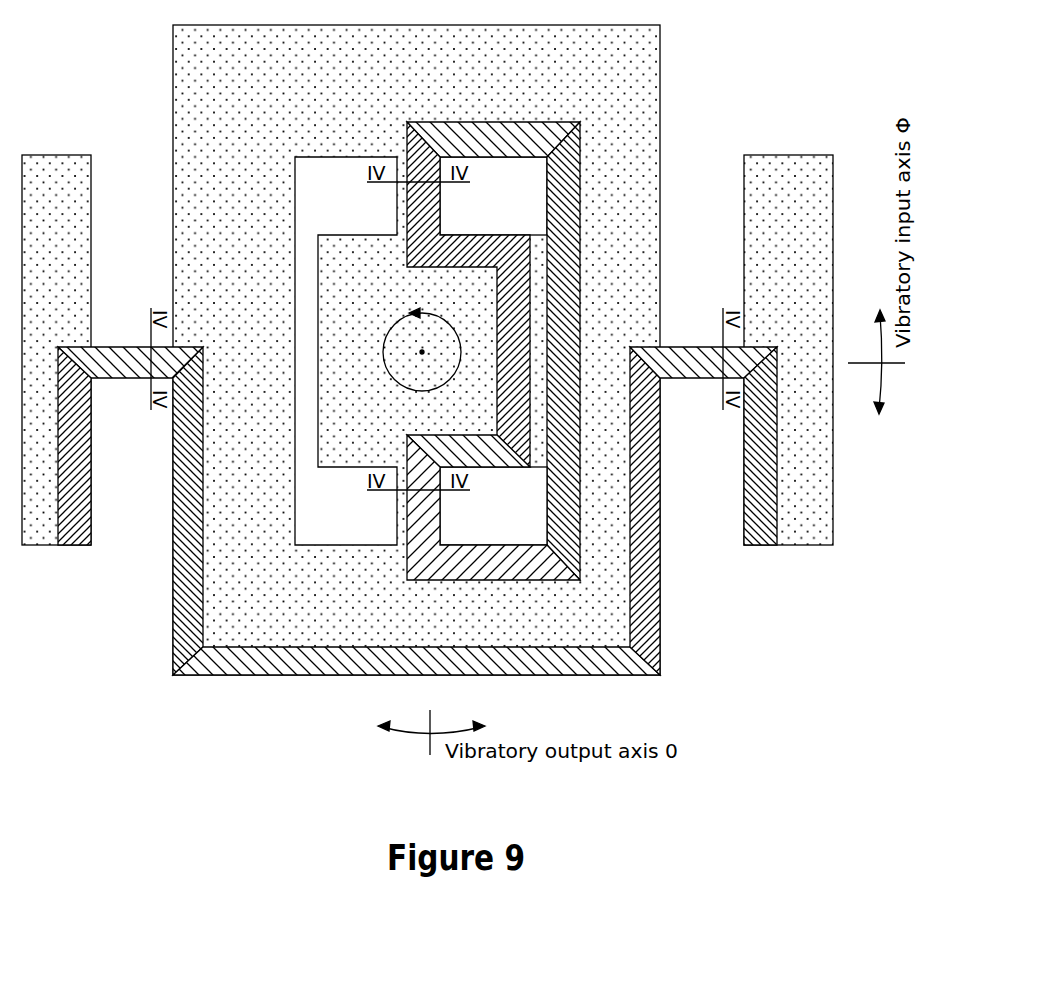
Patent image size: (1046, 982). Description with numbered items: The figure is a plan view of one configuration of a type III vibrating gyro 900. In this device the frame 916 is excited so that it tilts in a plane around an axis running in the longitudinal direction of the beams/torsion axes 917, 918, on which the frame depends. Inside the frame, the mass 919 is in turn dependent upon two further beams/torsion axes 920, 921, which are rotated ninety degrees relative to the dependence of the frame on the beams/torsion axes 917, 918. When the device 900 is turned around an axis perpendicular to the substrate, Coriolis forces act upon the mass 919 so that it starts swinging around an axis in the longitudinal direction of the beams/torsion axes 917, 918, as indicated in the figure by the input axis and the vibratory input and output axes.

The type III vibrating gyro 900 is at (772, 708).
The frame 916 is at (660, 121).
The beam/torsion axis 917 is at (122, 378).
The beam/torsion axis 918 is at (682, 337).
The mass 919 is at (393, 351).
The beam/torsion axis 920 is at (440, 214).
The beam/torsion axis 921 is at (440, 505).